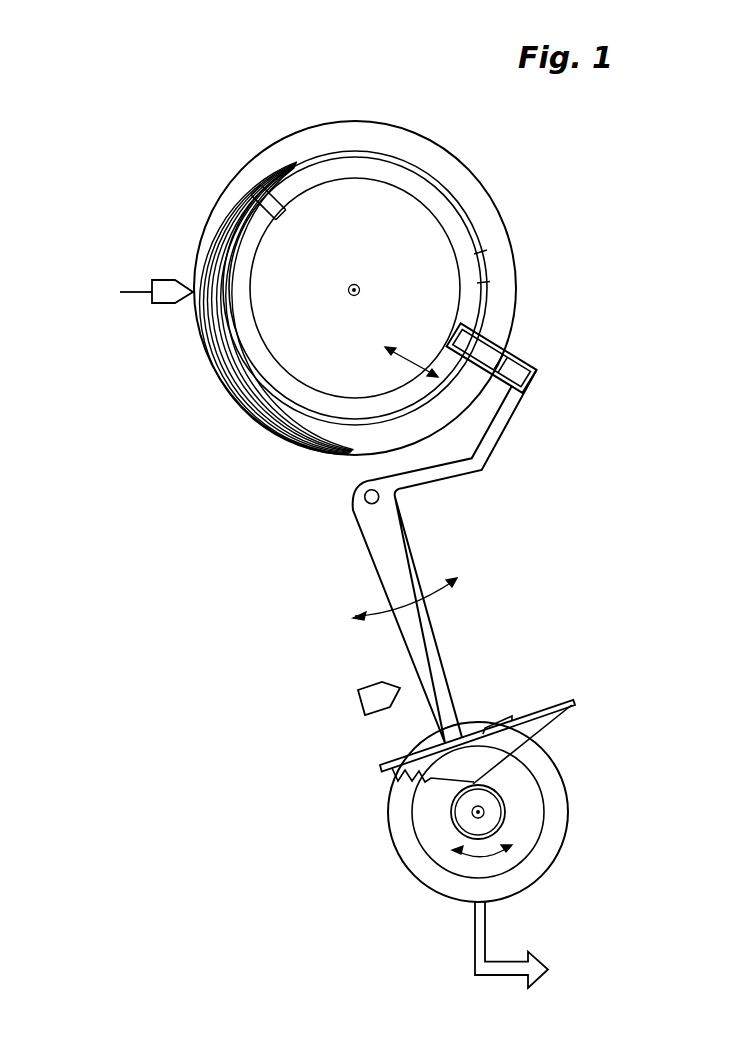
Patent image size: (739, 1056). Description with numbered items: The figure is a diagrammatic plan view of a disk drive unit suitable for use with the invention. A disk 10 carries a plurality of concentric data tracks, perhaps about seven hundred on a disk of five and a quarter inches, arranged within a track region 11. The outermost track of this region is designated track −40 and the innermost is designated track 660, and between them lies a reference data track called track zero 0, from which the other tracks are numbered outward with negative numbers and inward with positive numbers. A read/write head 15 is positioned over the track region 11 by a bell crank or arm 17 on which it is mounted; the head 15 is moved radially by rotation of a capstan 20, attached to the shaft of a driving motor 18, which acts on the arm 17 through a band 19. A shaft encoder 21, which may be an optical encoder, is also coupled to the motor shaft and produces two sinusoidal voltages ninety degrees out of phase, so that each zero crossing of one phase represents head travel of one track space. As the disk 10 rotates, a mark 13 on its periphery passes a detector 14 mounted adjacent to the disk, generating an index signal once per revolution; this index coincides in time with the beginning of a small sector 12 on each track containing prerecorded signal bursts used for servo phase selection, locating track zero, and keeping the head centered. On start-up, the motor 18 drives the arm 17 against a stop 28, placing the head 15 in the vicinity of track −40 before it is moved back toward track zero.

The disk 10 is at (477, 178).
The track region 11 is at (477, 220).
The track − 40 is at (483, 253).
The track zero 0 is at (484, 284).
The sector 12 is at (276, 214).
The track 660 is at (435, 222).
The detector 14 is at (162, 304).
The mark 13 is at (517, 343).
The read/write head 15 is at (458, 340).
The arm 17 is at (471, 470).
The stop 28 is at (360, 698).
The band 19 is at (572, 703).
The driving motor 18 is at (530, 814).
The capstan 20 is at (457, 812).
The shaft encoder 21 is at (567, 827).